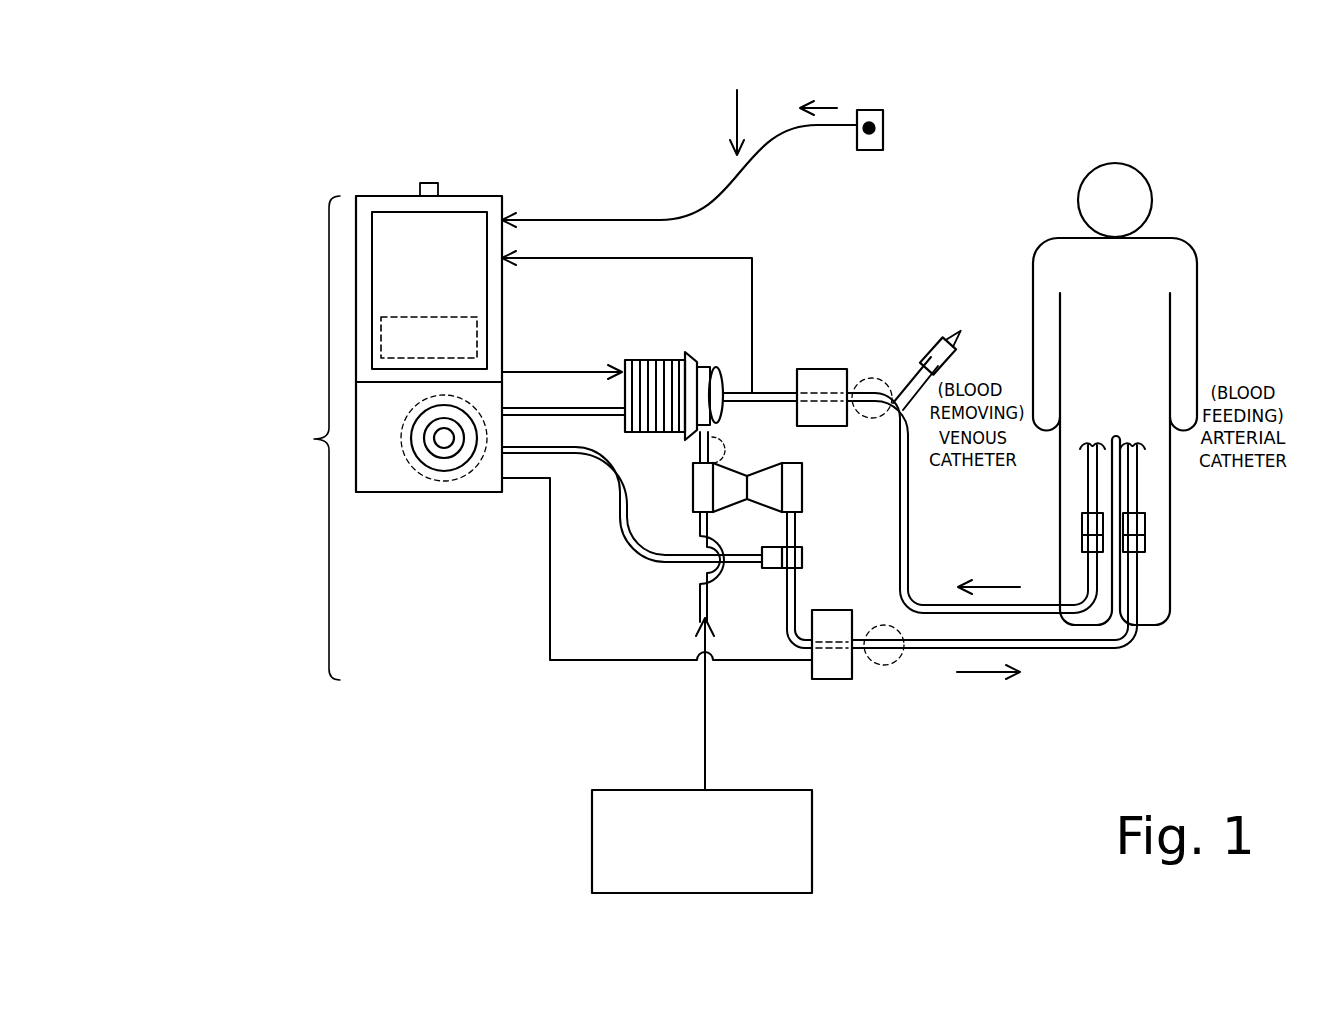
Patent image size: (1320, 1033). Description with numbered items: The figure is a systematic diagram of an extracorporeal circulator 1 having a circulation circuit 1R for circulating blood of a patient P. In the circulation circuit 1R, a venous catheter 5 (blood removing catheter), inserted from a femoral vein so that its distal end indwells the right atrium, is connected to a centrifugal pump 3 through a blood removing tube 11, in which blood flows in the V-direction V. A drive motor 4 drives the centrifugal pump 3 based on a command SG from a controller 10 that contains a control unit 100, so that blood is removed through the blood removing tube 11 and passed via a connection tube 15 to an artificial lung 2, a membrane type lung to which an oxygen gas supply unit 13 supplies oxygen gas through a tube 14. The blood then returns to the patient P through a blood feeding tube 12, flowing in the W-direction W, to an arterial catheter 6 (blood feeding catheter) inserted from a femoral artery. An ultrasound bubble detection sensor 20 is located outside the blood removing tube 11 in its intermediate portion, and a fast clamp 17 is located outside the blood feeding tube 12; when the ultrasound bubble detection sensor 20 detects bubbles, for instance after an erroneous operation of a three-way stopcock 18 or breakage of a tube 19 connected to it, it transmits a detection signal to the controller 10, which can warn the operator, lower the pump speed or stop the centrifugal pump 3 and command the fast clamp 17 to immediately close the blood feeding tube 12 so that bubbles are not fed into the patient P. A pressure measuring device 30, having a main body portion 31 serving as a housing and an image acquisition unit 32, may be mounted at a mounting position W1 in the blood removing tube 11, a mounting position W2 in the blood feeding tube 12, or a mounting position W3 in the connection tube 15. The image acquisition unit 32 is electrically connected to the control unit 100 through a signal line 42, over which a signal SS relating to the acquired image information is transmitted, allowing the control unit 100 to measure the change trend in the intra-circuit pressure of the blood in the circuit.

The extracorporeal circulator 1 is at (223, 438).
The controller 10 is at (467, 193).
The control unit 100 is at (427, 315).
The artificial lung 2 is at (803, 485).
The centrifugal pump 3 is at (707, 352).
The drive motor 4 is at (655, 358).
The venous catheter 5 is at (1082, 490).
The arterial catheter 6 is at (1143, 490).
The blood removing tube 11 is at (905, 545).
The blood feeding tube 12 is at (925, 655).
The oxygen gas supply unit 13 is at (690, 790).
The tube 14 is at (700, 597).
The connection tube 15 is at (712, 438).
The fast clamp 17 is at (832, 679).
The three-way stopcock 18 is at (945, 342).
The tube 19 is at (903, 375).
The ultrasound bubble detection sensor 20 is at (817, 369).
The pressure measuring device 30 is at (878, 93).
The main body portion 31 is at (883, 118).
The image acquisition unit 32 is at (876, 130).
The signal line 42 is at (717, 198).
The circulation circuit 1R is at (733, 103).
The signal SS is at (832, 107).
The command SG is at (548, 372).
The patient P is at (1152, 188).
The V-direction V is at (986, 561).
The W-direction W is at (1000, 680).
The mounting position W1 is at (868, 377).
The mounting position W2 is at (884, 665).
The mounting position W3 is at (690, 452).